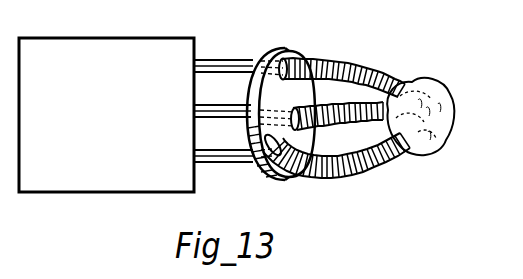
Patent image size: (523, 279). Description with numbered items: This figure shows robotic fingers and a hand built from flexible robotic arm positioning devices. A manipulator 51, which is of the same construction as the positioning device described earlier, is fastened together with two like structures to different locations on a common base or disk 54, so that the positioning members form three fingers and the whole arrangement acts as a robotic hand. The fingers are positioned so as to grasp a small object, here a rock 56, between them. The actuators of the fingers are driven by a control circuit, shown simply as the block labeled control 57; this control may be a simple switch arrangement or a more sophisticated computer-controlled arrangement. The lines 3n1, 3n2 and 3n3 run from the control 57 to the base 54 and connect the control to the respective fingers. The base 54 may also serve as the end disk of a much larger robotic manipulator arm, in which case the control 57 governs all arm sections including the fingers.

The control 57 is at (128, 38).
The base or disk 54 is at (283, 48).
The manipulator 51 is at (355, 58).
The rock 56 is at (452, 100).
The first control line set 3n1 is at (238, 54).
The second control line set 3n2 is at (244, 103).
The third control line set 3n3 is at (233, 143).